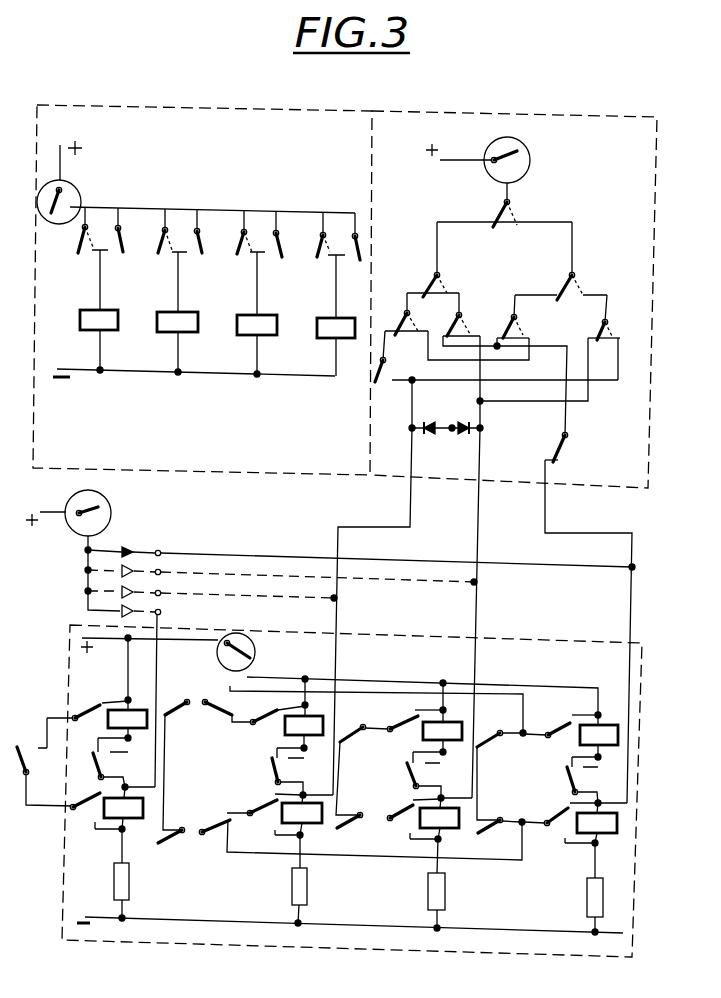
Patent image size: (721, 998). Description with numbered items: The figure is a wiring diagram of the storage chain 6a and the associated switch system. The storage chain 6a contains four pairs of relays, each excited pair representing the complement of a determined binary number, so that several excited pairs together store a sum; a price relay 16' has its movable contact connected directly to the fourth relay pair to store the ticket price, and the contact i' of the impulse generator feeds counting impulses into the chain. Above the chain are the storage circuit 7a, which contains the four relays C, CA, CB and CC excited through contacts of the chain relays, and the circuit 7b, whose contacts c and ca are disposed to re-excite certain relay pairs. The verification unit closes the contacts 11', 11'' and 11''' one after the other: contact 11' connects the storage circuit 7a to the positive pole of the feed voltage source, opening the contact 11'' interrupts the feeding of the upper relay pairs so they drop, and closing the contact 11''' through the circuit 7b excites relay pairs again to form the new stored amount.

The storage circuit 7a is at (176, 118).
The circuit 7b is at (541, 134).
The contact 11' is at (74, 182).
The contact 11'' is at (254, 652).
The contact 11''' is at (500, 160).
The price relay 16' is at (84, 513).
The storage chain 6a is at (560, 942).